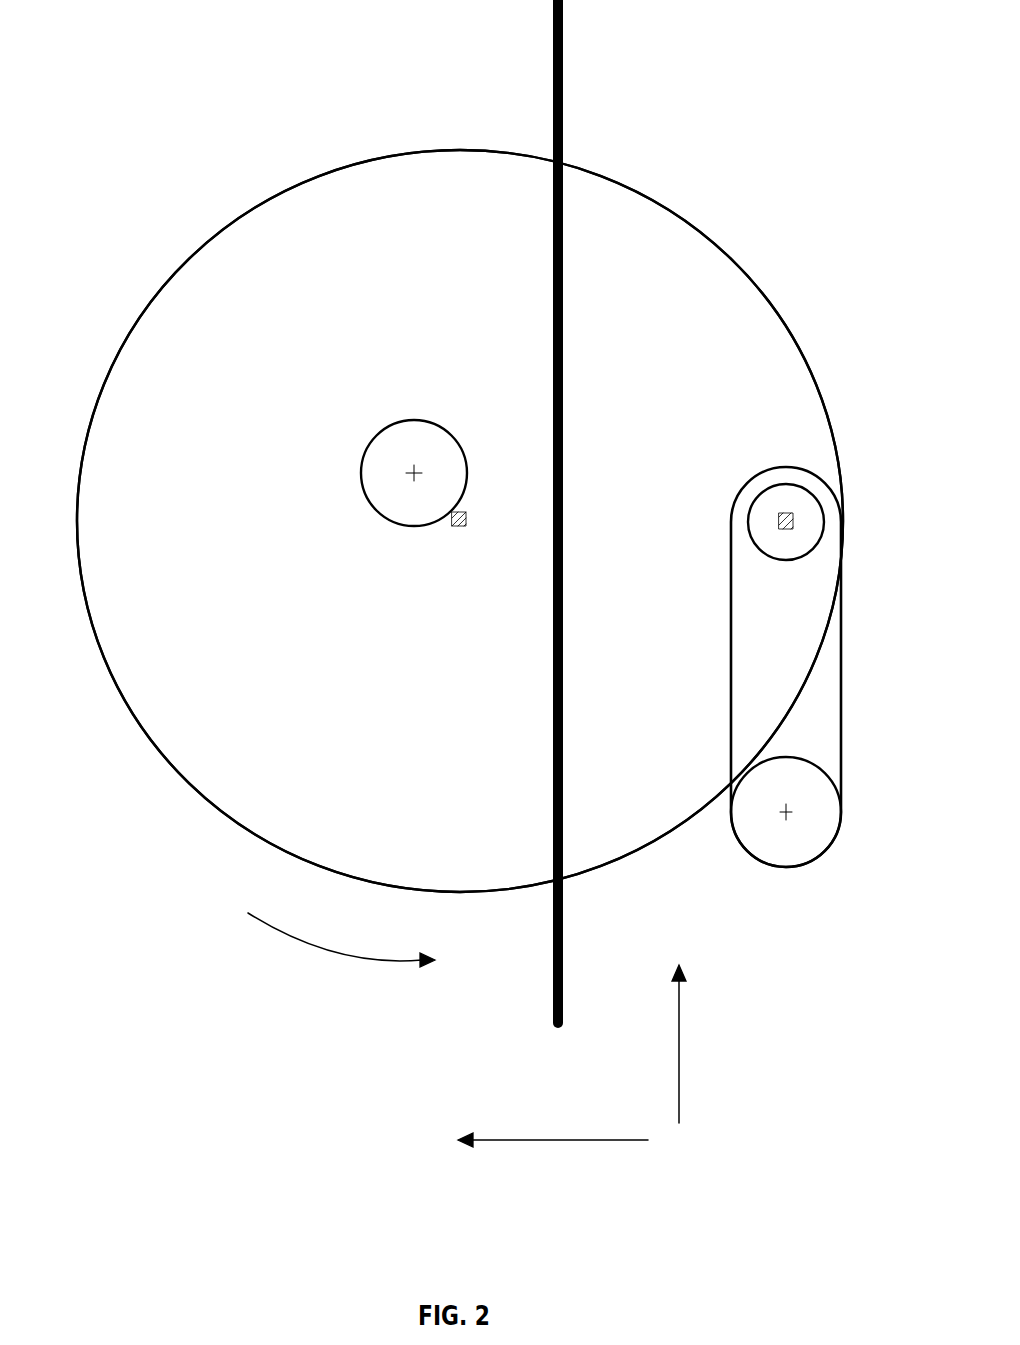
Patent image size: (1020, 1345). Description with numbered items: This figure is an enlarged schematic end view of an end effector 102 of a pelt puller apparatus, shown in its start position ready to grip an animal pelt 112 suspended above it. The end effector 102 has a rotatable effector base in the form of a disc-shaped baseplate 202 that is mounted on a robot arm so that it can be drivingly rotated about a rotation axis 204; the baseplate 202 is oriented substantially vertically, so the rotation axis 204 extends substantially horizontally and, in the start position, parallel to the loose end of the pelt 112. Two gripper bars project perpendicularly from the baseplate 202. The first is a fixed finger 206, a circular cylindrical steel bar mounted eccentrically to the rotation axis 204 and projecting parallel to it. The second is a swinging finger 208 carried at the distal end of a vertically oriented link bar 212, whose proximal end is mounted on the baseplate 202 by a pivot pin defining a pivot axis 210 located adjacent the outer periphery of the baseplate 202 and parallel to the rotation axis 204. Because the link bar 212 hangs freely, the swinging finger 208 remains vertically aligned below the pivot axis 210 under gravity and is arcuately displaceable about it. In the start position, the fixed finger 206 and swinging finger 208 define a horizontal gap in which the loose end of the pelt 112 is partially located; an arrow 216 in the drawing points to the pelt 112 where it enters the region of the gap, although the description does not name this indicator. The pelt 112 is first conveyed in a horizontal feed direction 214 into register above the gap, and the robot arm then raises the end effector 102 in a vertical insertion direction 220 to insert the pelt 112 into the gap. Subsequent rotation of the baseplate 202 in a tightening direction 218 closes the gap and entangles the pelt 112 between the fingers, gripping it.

The end effector 102 is at (730, 153).
The pelt 112 is at (556, 283).
The baseplate 202 is at (215, 273).
The rotation axis 204 is at (462, 519).
The fixed finger 206 is at (388, 443).
The swinging finger 208 is at (755, 837).
The pivot axis 210 is at (783, 513).
The link bar 212 is at (760, 636).
The feed direction 214 is at (571, 1118).
The media feed direction 216 is at (553, 113).
The tightening direction 218 is at (312, 948).
The insertion direction 220 is at (702, 1044).